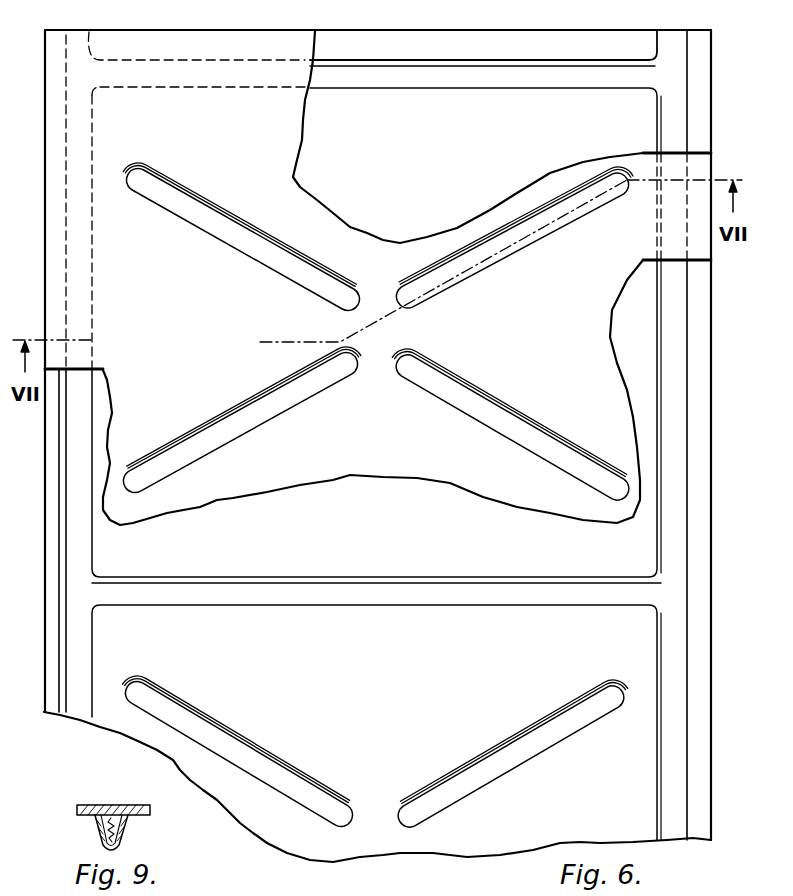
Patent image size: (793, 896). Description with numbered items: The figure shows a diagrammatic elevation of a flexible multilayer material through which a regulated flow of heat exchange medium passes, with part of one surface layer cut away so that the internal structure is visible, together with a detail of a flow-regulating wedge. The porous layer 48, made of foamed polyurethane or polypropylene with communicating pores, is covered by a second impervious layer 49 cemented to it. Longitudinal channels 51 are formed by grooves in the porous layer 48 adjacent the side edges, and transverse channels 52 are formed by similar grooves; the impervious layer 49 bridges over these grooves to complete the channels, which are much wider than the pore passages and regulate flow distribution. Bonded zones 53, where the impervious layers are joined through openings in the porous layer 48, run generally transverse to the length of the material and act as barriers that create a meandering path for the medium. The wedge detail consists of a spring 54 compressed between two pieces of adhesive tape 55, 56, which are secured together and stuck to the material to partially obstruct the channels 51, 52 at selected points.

In FIG. 6, the porous layer 48 is at (431, 219).
In FIG. 6, the second impervious layer 49 is at (240, 105).
In FIG. 6, the longitudinal channels 51 is at (86, 40).
In FIG. 6, the transverse channels 52 is at (493, 82).
In FIG. 6, the bonded zones 53 is at (290, 390).
In FIG. 9, the spring 54 is at (100, 833).
In FIG. 9, the adhesive tape 55 is at (132, 834).
In FIG. 9, the adhesive tape 56 is at (122, 805).